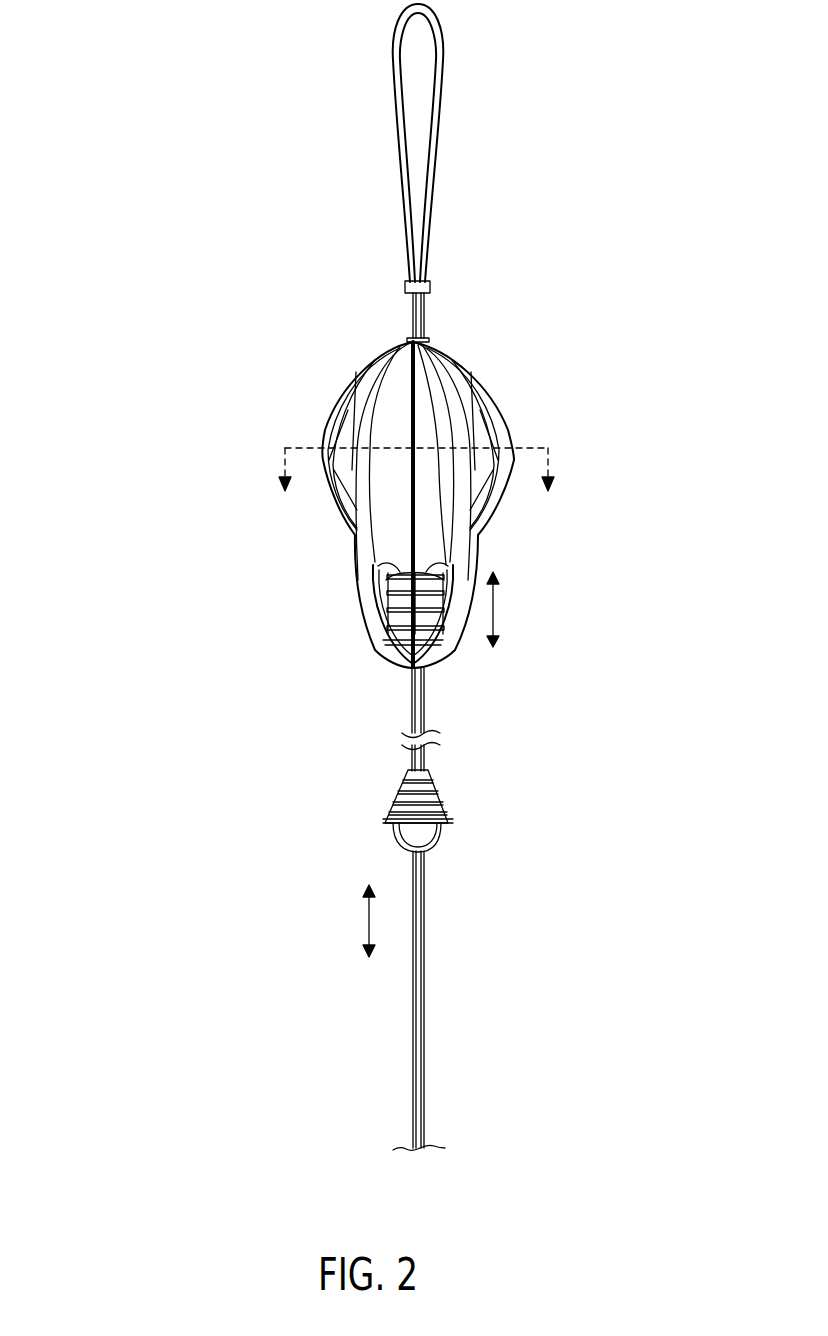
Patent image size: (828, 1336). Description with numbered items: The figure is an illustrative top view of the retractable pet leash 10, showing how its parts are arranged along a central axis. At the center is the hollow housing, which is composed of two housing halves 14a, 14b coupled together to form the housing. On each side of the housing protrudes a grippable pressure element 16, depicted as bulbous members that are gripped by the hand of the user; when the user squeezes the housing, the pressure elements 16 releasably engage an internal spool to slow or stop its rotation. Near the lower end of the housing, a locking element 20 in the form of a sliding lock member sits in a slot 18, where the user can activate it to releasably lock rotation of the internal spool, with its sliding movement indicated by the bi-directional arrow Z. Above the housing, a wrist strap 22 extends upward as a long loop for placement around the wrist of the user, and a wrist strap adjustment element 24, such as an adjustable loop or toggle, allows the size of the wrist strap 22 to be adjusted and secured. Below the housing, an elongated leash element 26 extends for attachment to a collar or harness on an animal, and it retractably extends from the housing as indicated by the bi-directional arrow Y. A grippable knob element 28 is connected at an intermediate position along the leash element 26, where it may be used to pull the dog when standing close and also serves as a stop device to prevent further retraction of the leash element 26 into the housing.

The retractable pet leash 10 is at (212, 389).
The housing half 14a is at (378, 543).
The housing half 14b is at (460, 542).
The grippable pressure element 16 is at (350, 388).
The slot 18 is at (405, 645).
The locking element 20 is at (410, 610).
The wrist strap 22 is at (398, 112).
The wrist strap adjustment element 24 is at (432, 287).
The elongated leash element 26 is at (418, 957).
The grippable knob element 28 is at (415, 832).
The bi-directional arrow Z is at (493, 605).
The bi-directional arrow Y is at (369, 915).